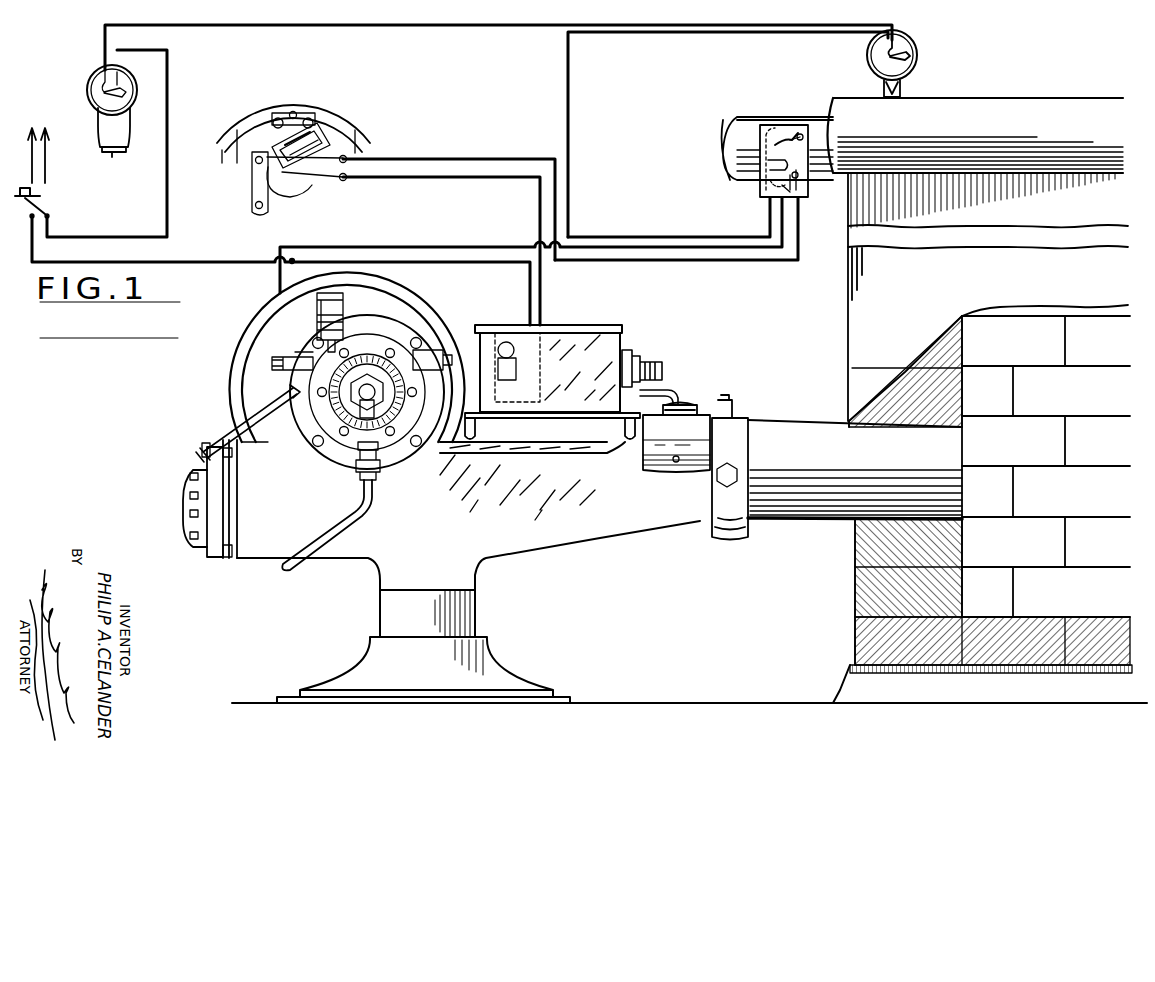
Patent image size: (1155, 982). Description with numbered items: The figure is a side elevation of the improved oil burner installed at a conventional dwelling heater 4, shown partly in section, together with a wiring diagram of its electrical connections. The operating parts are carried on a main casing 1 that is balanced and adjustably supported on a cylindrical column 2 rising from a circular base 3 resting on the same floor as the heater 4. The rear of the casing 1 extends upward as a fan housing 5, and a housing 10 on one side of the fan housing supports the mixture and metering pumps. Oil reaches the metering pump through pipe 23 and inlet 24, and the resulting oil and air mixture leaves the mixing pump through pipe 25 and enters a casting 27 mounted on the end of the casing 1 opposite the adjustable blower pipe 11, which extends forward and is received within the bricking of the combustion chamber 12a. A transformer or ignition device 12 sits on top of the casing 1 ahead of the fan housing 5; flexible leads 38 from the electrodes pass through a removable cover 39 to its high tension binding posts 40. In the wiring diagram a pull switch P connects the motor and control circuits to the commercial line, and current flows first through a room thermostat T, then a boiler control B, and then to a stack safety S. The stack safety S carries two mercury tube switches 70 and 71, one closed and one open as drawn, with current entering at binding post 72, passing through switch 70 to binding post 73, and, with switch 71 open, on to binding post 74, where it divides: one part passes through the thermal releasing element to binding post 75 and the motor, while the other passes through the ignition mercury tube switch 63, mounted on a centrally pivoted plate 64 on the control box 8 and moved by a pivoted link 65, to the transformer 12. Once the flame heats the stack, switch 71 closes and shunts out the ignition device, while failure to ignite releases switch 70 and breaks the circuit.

The main casing 1 is at (600, 523).
The cylindrical column 2 is at (460, 615).
The circular base 3 is at (488, 678).
The heater 4 is at (978, 259).
The fan housing 5 is at (425, 310).
The control box 8 is at (347, 117).
The housing 10 is at (340, 444).
The adjustable blower pipe 11 is at (770, 430).
The transformer or ignition device 12 is at (568, 345).
The combustion chamber 12a is at (982, 504).
The pipe 23 is at (343, 520).
The inlet 24 is at (380, 452).
The pipe 25 is at (253, 403).
The casting 27 is at (218, 535).
The flexible leads 38 is at (674, 387).
The removable cover 39 is at (700, 415).
The high tension binding posts 40 is at (640, 352).
The mercury tube switch 63 is at (313, 147).
The centrally pivoted plate 64 is at (327, 152).
The pivoted link 65 is at (260, 188).
The mercury tube switch 70 is at (764, 182).
The mercury tube switch 71 is at (780, 143).
The binding post 72 is at (767, 197).
The binding post 73 is at (802, 137).
The binding post 74 is at (808, 192).
The binding post 75 is at (790, 197).
The boiler control B is at (913, 75).
The pull switch P is at (39, 173).
The stack safety S is at (797, 124).
The room thermostat T is at (108, 155).